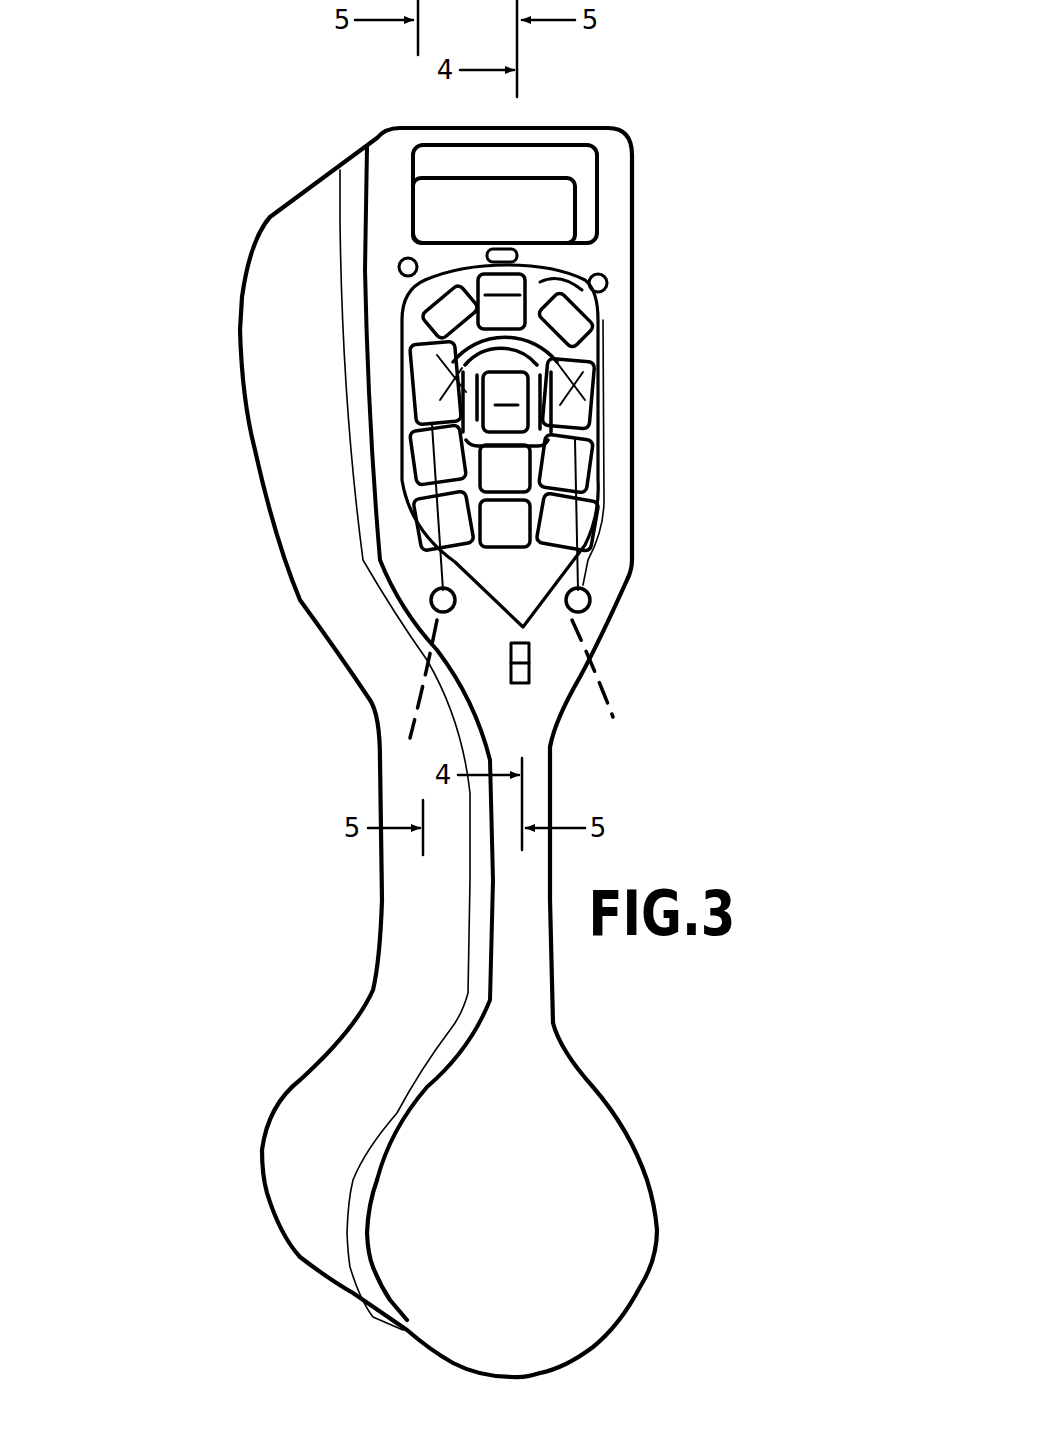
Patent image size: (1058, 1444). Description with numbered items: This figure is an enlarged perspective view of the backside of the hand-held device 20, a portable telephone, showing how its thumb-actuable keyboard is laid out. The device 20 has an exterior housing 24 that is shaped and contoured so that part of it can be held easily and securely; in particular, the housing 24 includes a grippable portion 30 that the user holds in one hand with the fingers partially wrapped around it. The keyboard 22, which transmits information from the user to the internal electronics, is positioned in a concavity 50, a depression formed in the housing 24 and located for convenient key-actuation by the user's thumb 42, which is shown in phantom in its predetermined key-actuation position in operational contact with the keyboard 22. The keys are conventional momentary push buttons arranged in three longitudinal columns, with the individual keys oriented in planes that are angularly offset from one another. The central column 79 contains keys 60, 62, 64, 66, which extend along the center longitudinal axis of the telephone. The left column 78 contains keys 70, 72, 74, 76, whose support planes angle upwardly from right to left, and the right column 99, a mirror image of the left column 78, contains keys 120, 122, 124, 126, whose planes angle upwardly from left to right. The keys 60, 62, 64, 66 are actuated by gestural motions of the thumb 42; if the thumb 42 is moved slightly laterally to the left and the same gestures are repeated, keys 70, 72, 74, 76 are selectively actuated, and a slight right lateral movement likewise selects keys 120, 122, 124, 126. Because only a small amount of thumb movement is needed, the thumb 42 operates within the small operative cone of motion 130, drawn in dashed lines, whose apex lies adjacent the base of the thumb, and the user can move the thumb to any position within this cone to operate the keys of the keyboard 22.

The hand-held device 20 is at (668, 188).
The keyboard 22 is at (602, 310).
The exterior housing 24 is at (297, 240).
The grippable portion 30 is at (423, 905).
The thumb 42 is at (590, 678).
The concavity 50 is at (518, 603).
The key 60 is at (482, 300).
The key 62 is at (517, 395).
The key 64 is at (517, 547).
The key 66 is at (483, 550).
The key 70 is at (410, 290).
The key 72 is at (430, 385).
The key 74 is at (420, 462).
The key 76 is at (423, 528).
The left column 78 is at (443, 273).
The central column 79 is at (510, 238).
The right column 99 is at (568, 288).
The key 120 is at (575, 330).
The key 122 is at (580, 405).
The key 124 is at (588, 470).
The key 126 is at (580, 503).
The cone of motion 130 is at (455, 352).